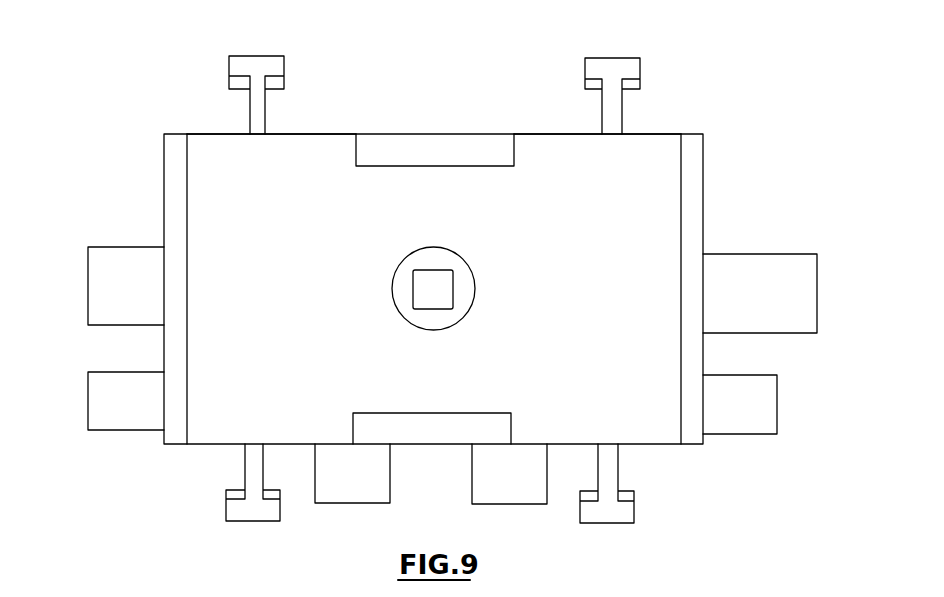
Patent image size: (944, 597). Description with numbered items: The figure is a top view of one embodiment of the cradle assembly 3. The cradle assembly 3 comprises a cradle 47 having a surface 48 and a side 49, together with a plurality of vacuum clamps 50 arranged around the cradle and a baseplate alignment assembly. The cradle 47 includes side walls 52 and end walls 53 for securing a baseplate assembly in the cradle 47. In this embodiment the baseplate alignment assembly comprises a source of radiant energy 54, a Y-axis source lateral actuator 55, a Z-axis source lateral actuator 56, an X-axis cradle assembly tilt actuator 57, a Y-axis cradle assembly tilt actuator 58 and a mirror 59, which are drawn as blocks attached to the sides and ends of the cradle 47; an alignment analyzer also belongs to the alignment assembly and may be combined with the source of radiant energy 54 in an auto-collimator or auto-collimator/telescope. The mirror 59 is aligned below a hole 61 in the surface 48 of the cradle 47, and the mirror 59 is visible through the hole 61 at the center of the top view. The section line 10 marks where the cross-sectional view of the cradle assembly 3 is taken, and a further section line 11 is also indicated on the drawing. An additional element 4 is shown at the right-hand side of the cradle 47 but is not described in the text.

The cradle assembly 3 is at (700, 65).
The side module 4 is at (740, 253).
The line 10— 10 is at (82, 284).
The section line 11 is at (268, 24).
The cradle 47 is at (668, 133).
The surface 48 is at (563, 137).
The side 49 is at (333, 133).
The vacuum clamps 50 is at (250, 54).
The side walls 52 is at (440, 140).
The end walls 53 is at (174, 157).
The source of radiant energy 54 is at (135, 246).
The Y-axis source lateral actuator 55 is at (358, 502).
The Z-axis source lateral actuator 56 is at (88, 400).
The X-axis cradle assembly tilt actuator 57 is at (777, 403).
The Y-axis cradle assembly tilt actuator 58 is at (490, 503).
The mirror 59 is at (453, 290).
The hole 61 is at (460, 320).